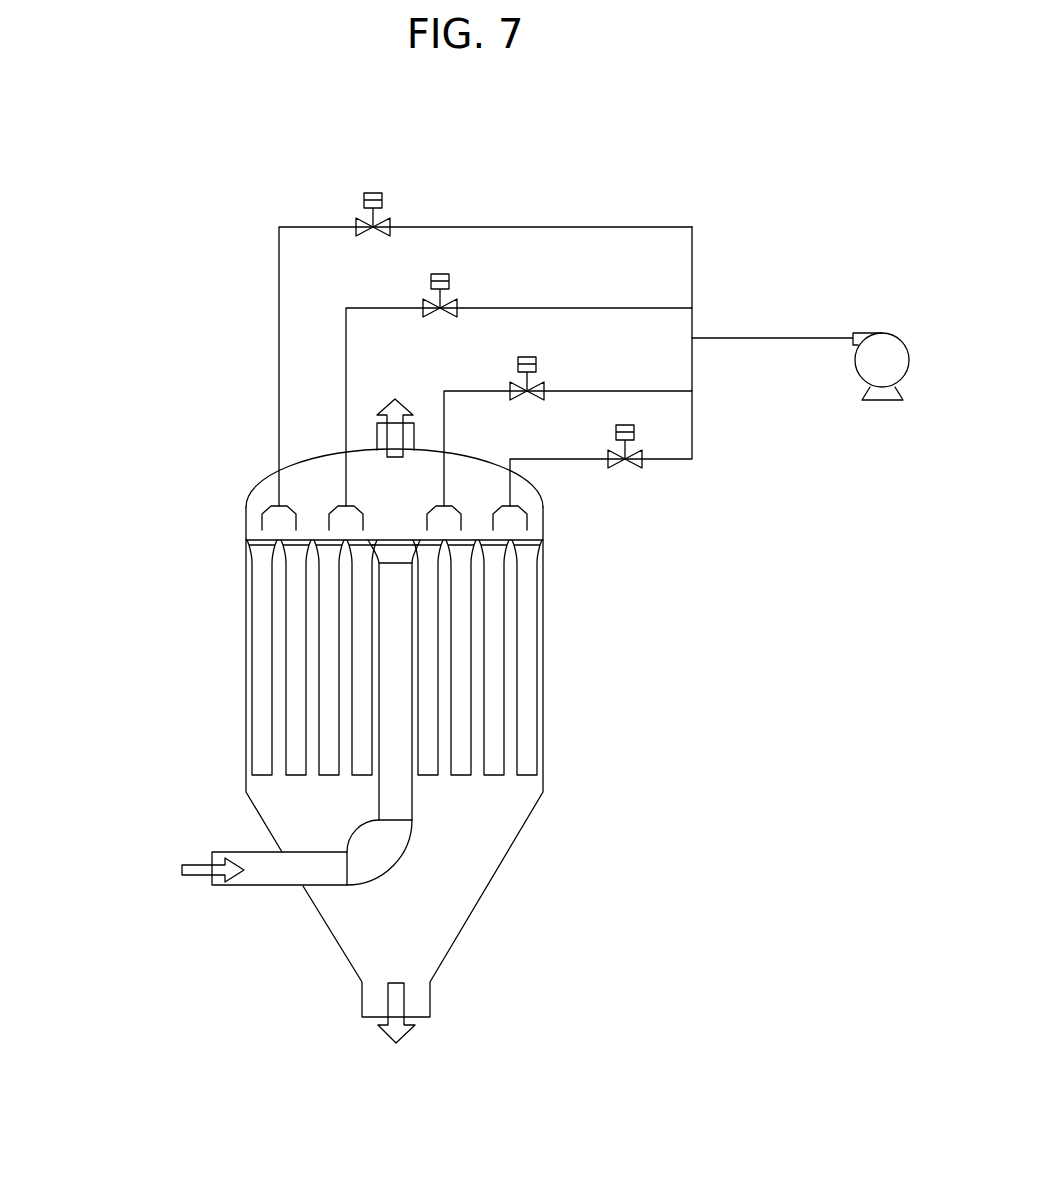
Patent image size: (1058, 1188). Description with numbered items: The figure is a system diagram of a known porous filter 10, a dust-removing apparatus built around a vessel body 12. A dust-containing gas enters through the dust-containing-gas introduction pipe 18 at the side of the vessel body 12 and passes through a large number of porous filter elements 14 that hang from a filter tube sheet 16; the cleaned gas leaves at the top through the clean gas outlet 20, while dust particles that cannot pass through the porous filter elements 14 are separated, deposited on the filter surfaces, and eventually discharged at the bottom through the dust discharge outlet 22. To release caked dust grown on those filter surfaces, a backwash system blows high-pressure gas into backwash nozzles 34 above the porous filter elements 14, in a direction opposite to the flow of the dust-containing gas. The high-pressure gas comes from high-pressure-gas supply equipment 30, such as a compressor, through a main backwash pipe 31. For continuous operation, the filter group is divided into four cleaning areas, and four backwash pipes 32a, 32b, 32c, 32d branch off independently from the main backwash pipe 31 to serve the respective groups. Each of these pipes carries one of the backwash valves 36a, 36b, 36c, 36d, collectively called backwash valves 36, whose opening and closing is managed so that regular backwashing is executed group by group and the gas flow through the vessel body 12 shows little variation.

The porous filter 10 is at (390, 701).
The vessel body 12 is at (543, 766).
The porous filter element 14 is at (537, 697).
The filter tube sheet 16 is at (533, 545).
The dust-containing-gas introduction pipe 18 is at (240, 886).
The clean gas outlet 20 is at (377, 437).
The dust discharge outlet 22 is at (373, 1017).
The high-pressure-gas supply equipment 30 is at (877, 333).
The main backwash pipe 31 is at (776, 338).
The backwash pipe 32a is at (616, 227).
The backwash pipe 32b is at (617, 308).
The backwash pipe 32c is at (618, 391).
The backwash pipe 32d is at (665, 459).
The backwash nozzle 34 is at (262, 508).
The backwash valve 36 is at (545, 287).
The backwash valve 36a is at (383, 217).
The backwash valve 36b is at (450, 299).
The backwash valve 36c is at (540, 383).
The backwash valve 36d is at (630, 425).